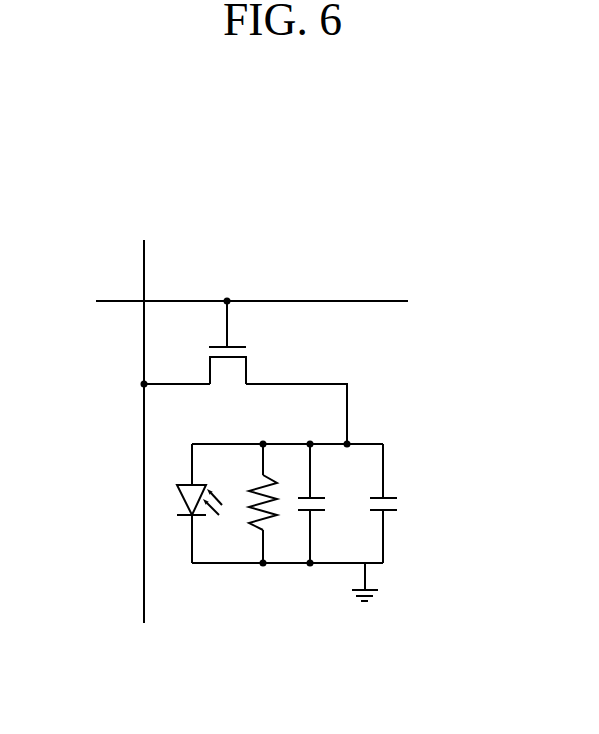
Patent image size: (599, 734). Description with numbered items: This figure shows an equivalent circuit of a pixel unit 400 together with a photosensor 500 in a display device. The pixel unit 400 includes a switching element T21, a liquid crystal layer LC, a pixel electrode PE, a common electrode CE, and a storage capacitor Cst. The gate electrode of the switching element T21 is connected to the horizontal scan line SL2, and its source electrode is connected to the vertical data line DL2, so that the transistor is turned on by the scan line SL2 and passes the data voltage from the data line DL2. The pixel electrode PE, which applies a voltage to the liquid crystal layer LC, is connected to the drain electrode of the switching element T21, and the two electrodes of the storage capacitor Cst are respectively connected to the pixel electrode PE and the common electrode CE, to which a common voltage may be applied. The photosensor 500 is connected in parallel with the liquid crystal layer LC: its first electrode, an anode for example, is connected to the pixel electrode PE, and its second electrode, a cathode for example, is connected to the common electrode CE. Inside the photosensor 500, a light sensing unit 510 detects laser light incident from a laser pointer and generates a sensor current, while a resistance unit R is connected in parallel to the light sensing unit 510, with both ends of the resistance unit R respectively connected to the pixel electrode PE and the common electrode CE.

The pixel unit 400 is at (281, 262).
The photosensor 500 is at (235, 575).
The light sensing unit 510 is at (180, 498).
The scan line SL2 is at (115, 300).
The data line DL2 is at (145, 262).
The switching element T21 is at (246, 373).
The resistance unit R is at (275, 522).
The liquid crystal layer LC is at (325, 503).
The pixel electrode PE is at (320, 477).
The common electrode CE is at (320, 531).
The storage capacitor Cst is at (401, 503).